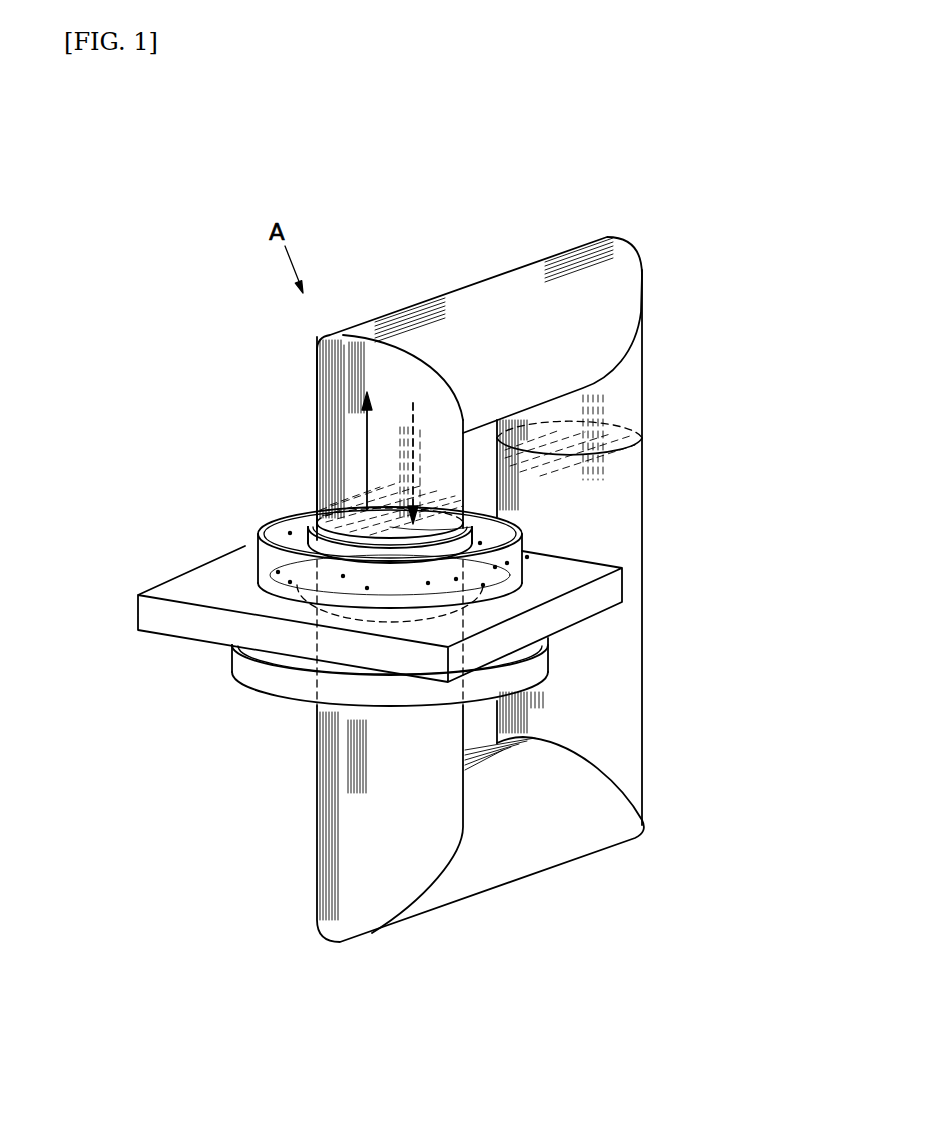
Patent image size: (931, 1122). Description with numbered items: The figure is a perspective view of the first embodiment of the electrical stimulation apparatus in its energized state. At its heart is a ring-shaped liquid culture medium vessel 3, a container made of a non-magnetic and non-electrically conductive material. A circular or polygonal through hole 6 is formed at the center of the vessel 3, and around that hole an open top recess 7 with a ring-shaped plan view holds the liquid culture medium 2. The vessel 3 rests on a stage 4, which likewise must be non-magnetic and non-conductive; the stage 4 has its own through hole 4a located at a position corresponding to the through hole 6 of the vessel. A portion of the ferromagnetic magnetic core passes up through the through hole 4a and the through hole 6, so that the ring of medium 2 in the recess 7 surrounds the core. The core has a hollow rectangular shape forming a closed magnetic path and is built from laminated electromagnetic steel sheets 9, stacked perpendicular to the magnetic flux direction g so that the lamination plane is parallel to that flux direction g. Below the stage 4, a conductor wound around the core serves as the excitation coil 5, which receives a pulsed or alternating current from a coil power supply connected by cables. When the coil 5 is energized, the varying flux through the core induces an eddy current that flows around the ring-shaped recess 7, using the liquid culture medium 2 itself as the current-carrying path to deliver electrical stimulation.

The electromagnetic steel sheets 9 is at (333, 388).
The magnetic flux direction g is at (420, 470).
The through hole 6 is at (490, 530).
The liquid culture medium 2 is at (513, 527).
The open top recess 7 is at (527, 537).
The liquid culture medium vessel 3 is at (523, 550).
The through hole 4a is at (483, 552).
The stage 4 is at (588, 598).
The excitation coil 5 is at (488, 680).